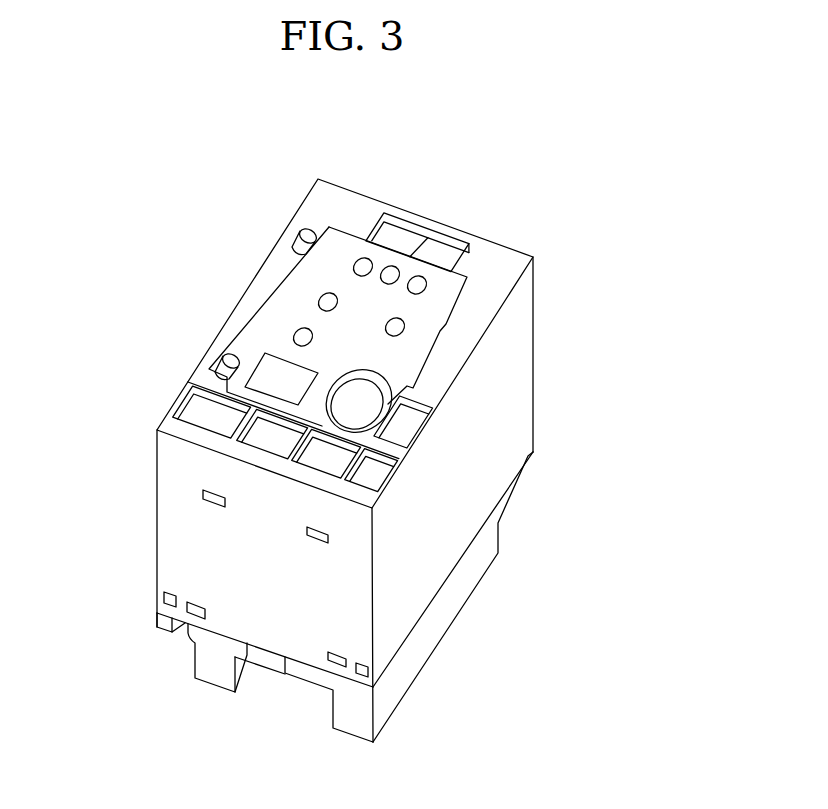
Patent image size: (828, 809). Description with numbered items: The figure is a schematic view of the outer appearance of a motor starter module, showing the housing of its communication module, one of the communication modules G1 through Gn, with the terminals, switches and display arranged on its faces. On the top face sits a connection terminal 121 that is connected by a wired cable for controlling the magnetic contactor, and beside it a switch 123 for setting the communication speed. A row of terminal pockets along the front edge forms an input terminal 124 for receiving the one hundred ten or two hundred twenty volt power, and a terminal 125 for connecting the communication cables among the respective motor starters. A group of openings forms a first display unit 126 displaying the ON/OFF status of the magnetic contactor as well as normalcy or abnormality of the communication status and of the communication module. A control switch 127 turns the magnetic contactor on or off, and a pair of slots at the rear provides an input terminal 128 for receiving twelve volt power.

The connection terminal 121 is at (198, 390).
The switch 123 is at (266, 368).
The input terminal 124 is at (307, 455).
The terminal 125 is at (380, 462).
The first display unit 126 is at (372, 263).
The control switch 127 is at (387, 323).
The input terminal 128 is at (425, 240).